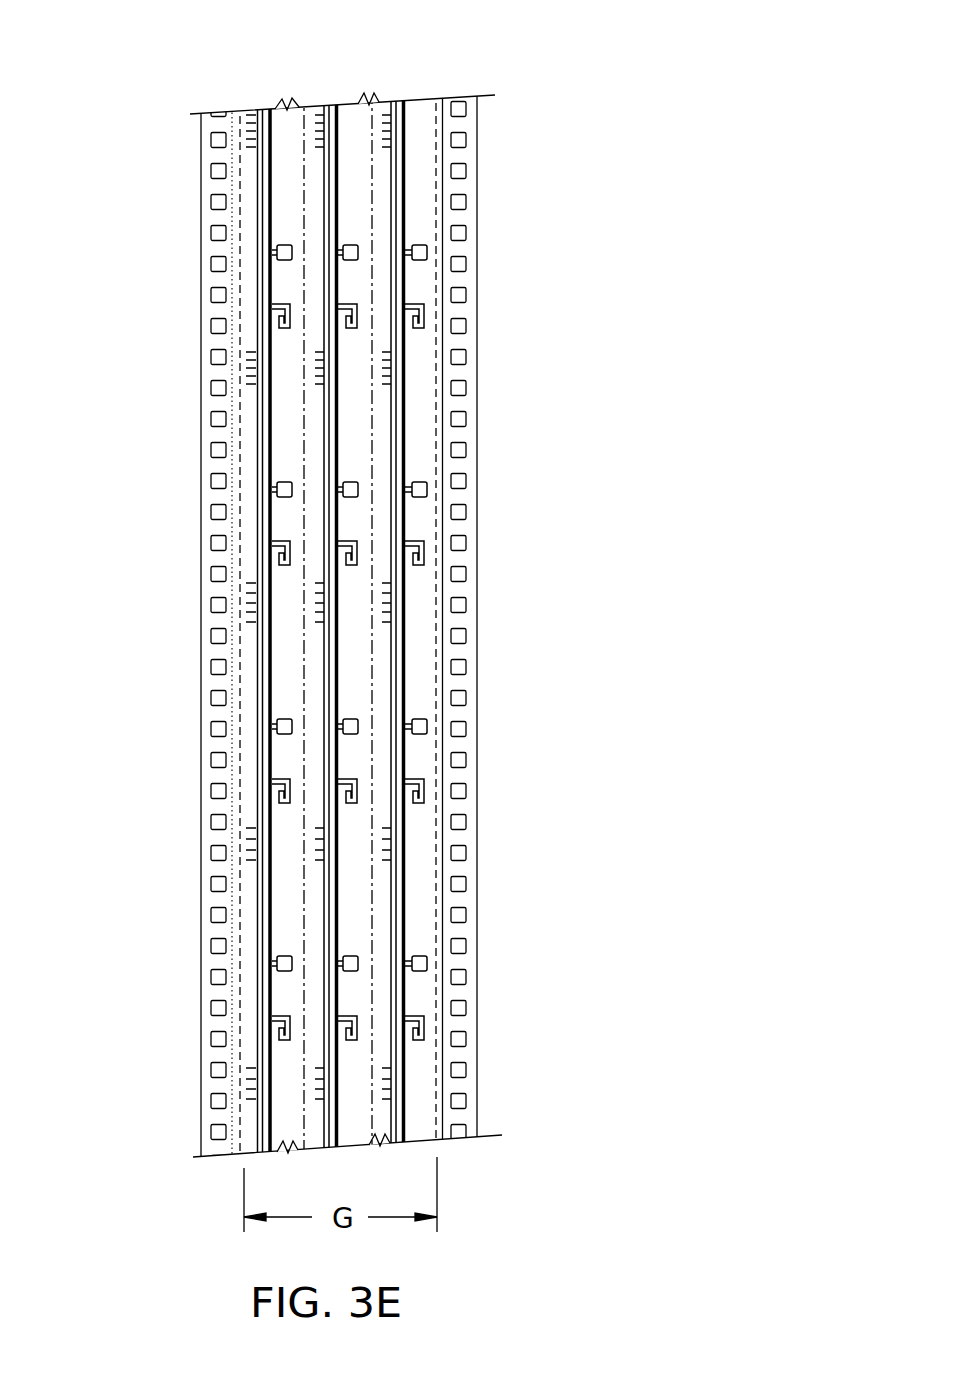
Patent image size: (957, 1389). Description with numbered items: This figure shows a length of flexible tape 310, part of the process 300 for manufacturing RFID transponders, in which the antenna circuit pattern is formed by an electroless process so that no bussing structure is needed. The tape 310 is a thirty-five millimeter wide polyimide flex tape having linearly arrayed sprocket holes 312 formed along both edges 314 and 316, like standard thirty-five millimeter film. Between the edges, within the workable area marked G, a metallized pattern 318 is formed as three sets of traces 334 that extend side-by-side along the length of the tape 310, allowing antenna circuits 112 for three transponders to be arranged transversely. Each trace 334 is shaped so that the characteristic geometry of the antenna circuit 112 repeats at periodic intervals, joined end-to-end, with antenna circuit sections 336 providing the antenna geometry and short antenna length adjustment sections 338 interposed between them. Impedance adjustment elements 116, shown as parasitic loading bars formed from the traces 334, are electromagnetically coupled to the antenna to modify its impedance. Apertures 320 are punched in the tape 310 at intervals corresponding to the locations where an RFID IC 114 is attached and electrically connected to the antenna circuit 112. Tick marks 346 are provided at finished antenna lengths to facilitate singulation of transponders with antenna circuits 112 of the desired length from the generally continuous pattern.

The flexible tape 310 is at (421, 110).
The tape edge 314 is at (198, 172).
The sprocket holes 312 is at (458, 141).
The tape edge 316 is at (474, 183).
The metallized pattern 318 is at (408, 215).
The aperture 320 is at (418, 252).
The antenna circuit 112 is at (256, 213).
The RFID IC 114 is at (283, 253).
The impedance adjustment element 116 is at (258, 313).
The process 300 is at (403, 407).
The tick marks 346 is at (254, 383).
The antenna length adjustment section 338 is at (397, 637).
The antenna circuit section 336 is at (407, 687).
The traces 334 is at (397, 637).